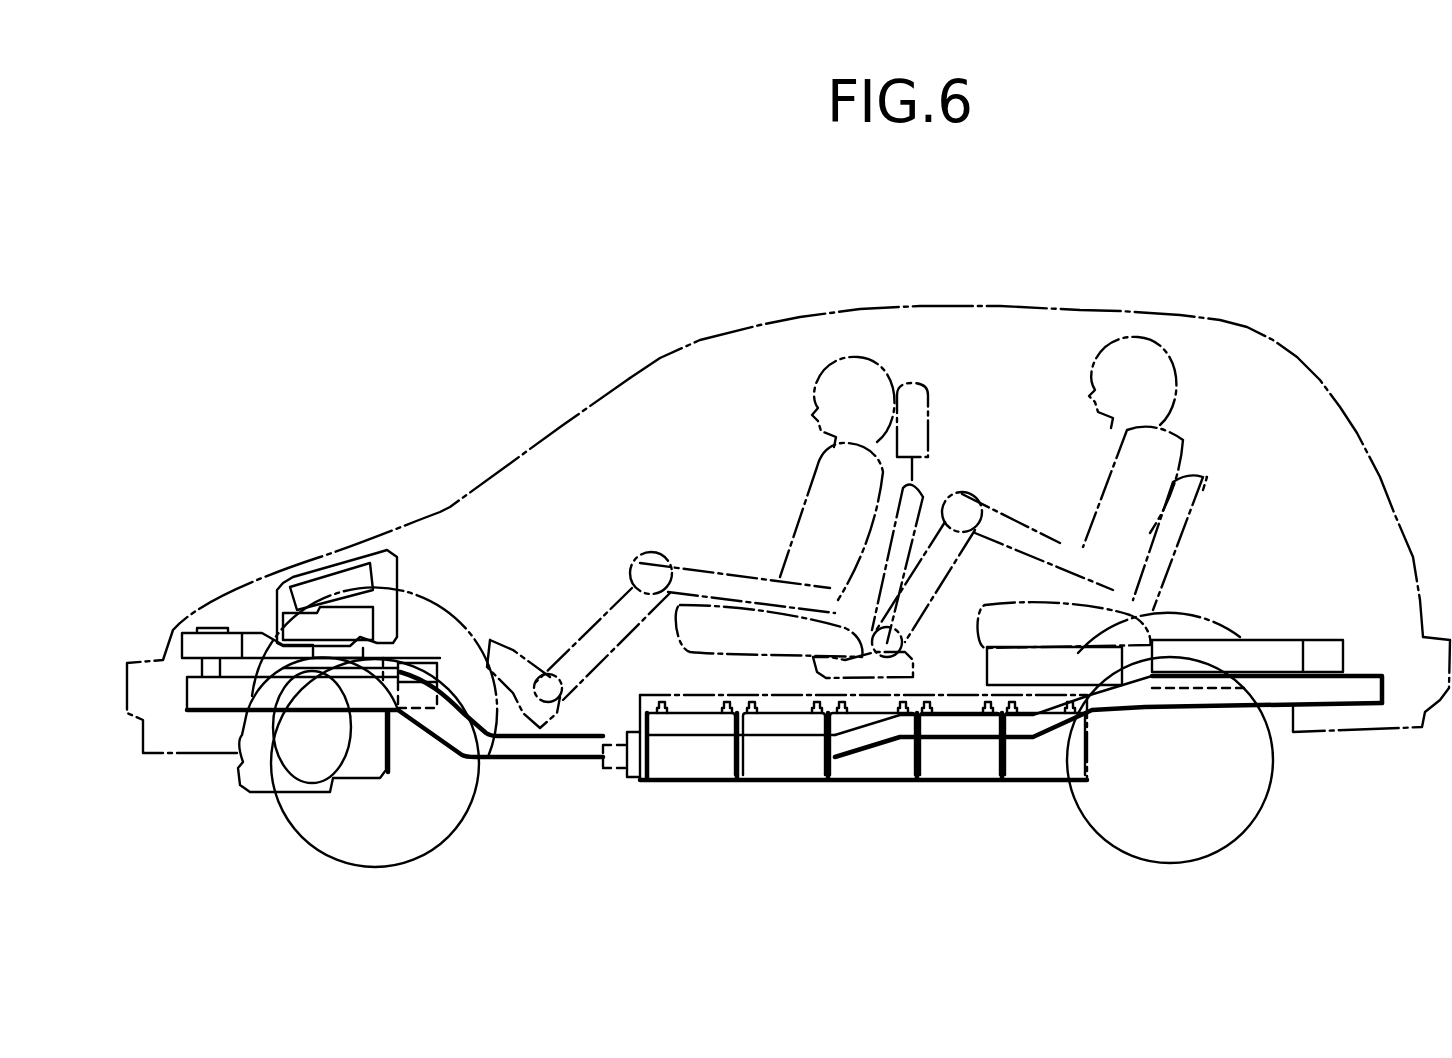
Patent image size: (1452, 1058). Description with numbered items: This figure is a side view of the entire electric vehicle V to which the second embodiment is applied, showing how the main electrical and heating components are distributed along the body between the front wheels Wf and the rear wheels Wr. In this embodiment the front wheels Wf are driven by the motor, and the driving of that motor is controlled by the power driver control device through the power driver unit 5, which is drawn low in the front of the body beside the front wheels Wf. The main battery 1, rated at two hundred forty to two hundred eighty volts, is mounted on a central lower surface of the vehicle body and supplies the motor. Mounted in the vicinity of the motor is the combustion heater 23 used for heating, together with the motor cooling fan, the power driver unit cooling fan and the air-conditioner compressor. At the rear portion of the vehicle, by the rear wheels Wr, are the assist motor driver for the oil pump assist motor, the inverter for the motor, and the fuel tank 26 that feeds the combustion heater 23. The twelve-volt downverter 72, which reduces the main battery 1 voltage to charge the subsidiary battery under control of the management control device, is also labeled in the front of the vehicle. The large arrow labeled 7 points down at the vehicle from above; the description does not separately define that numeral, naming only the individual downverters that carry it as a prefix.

The main battery 1 is at (848, 765).
The power driver unit 5 is at (366, 708).
The control system 7 is at (908, 262).
The 12 V downverter 72 is at (333, 577).
The combustion heater 23 is at (425, 667).
The fuel tank 26 is at (987, 667).
The electric vehicle V is at (548, 390).
The front wheels Wf is at (280, 808).
The rear wheels Wr is at (1268, 798).